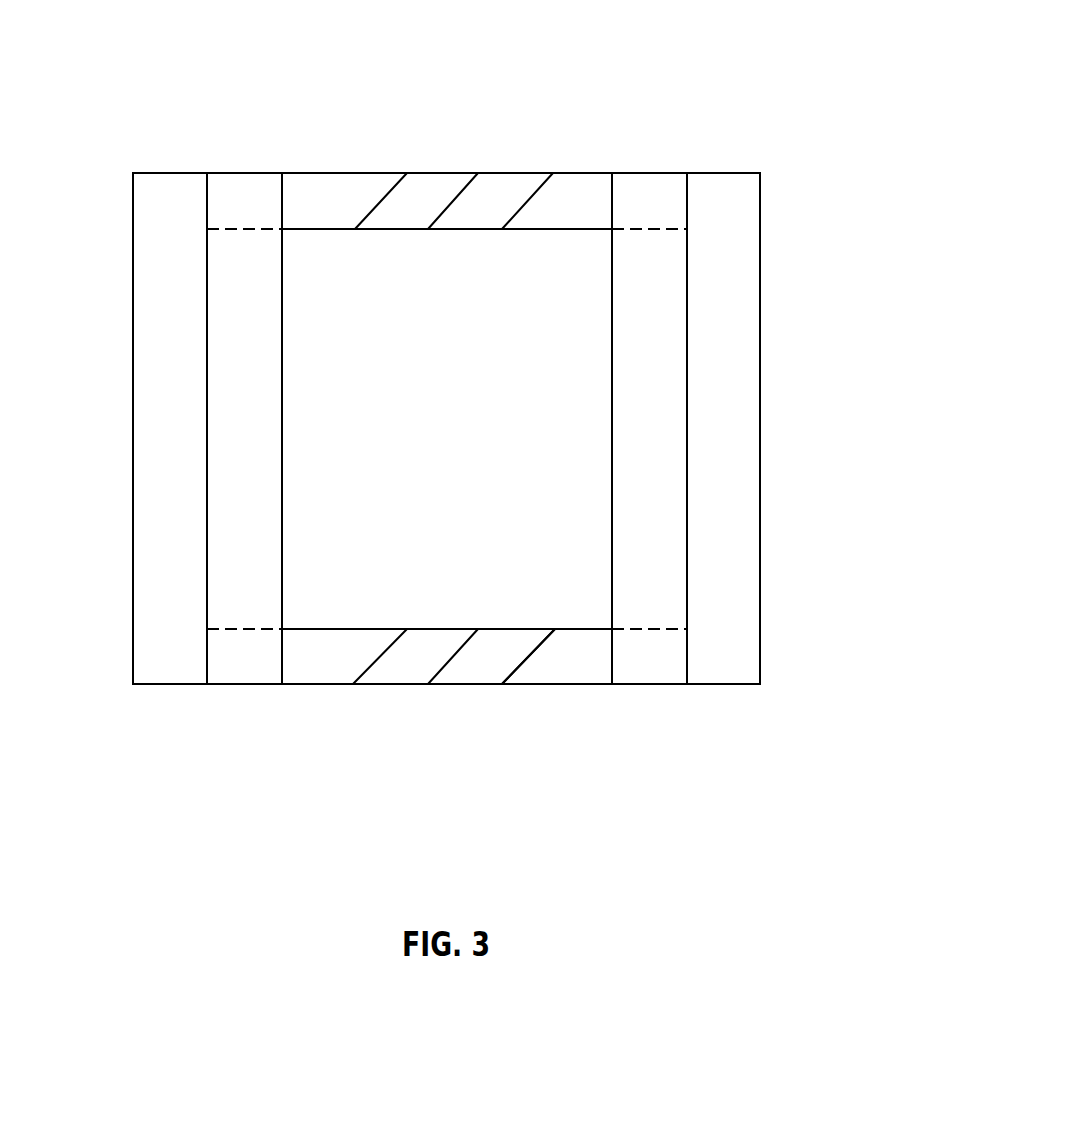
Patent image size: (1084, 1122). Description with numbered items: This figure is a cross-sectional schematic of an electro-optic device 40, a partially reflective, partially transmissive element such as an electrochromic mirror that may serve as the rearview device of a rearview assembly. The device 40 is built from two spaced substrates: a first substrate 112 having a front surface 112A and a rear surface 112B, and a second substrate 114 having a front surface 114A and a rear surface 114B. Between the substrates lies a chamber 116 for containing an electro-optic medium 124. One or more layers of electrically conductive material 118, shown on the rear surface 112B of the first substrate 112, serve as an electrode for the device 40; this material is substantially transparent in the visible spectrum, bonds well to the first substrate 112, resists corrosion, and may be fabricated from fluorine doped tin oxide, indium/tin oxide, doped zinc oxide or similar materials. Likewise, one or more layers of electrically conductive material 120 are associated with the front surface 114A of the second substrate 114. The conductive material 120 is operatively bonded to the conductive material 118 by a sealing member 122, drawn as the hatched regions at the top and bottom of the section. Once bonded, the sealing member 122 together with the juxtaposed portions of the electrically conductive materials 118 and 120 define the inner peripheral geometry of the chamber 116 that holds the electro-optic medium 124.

The electro-optic device 40 is at (673, 113).
The first substrate 112 is at (170, 684).
The front surface 112A is at (133, 356).
The rear surface 112B is at (207, 270).
The second substrate 114 is at (722, 684).
The front surface 114A is at (688, 269).
The rear surface 114B is at (762, 355).
The chamber 116 is at (465, 428).
The electrically conductive material 118 is at (240, 597).
The electrically conductive material 120 is at (653, 597).
The sealing member 122 is at (364, 190).
The electro-optic medium 124 is at (537, 587).